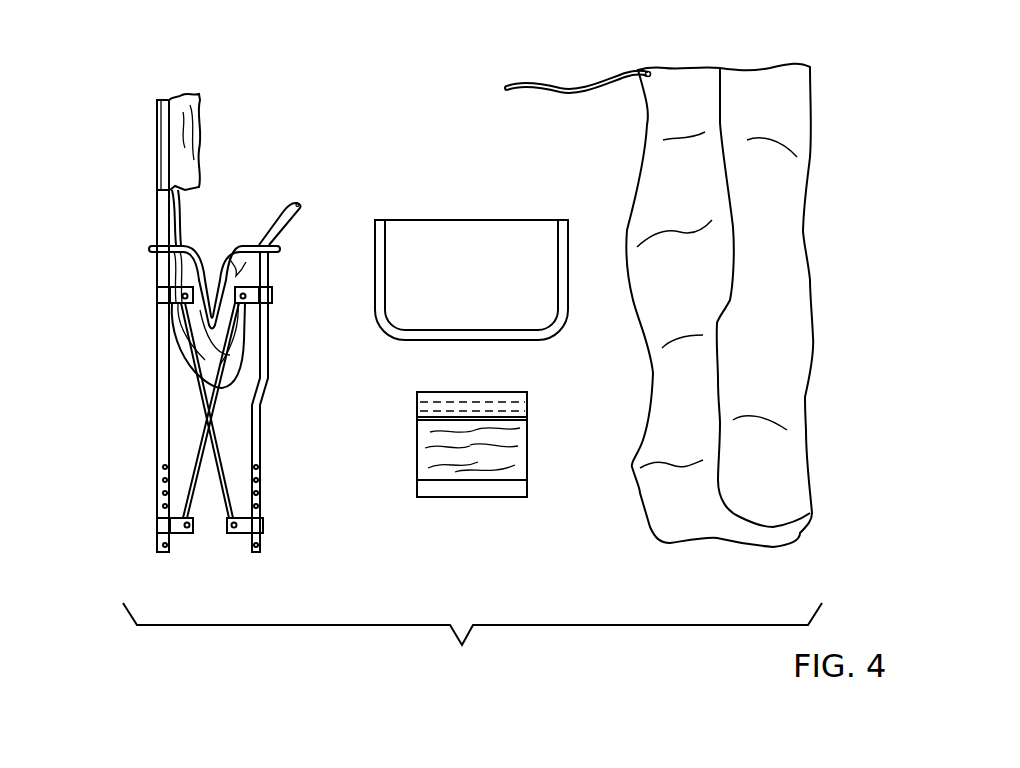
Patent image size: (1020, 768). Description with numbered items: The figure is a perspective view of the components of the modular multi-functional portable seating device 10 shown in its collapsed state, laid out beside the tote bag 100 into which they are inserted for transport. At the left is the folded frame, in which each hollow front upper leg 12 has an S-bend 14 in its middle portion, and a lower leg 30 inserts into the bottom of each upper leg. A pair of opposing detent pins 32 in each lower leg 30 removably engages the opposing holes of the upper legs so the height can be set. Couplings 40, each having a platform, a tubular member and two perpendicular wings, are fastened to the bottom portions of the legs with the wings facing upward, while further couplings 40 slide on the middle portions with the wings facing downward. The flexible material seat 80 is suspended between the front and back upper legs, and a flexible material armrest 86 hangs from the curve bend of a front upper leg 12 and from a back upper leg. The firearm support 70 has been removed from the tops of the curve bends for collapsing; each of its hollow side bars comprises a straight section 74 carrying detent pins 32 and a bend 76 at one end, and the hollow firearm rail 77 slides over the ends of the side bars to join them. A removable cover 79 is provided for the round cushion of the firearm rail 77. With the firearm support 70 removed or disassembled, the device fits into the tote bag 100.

The modular multi-functional portable seating device 10 is at (472, 649).
The front upper leg 12 is at (263, 494).
The S-bend 14 is at (292, 412).
The lower leg 30 is at (255, 552).
The detent pins 32 is at (160, 497).
The coupling 40 is at (158, 526).
The firearm support 70 is at (437, 248).
The straight section 74 is at (375, 278).
The bend 76 is at (383, 333).
The firearm rail 77 is at (466, 330).
The cover 79 is at (527, 417).
The flexible material seat 80 is at (135, 136).
The armrest 86 is at (183, 231).
The tote bag 100 is at (606, 208).